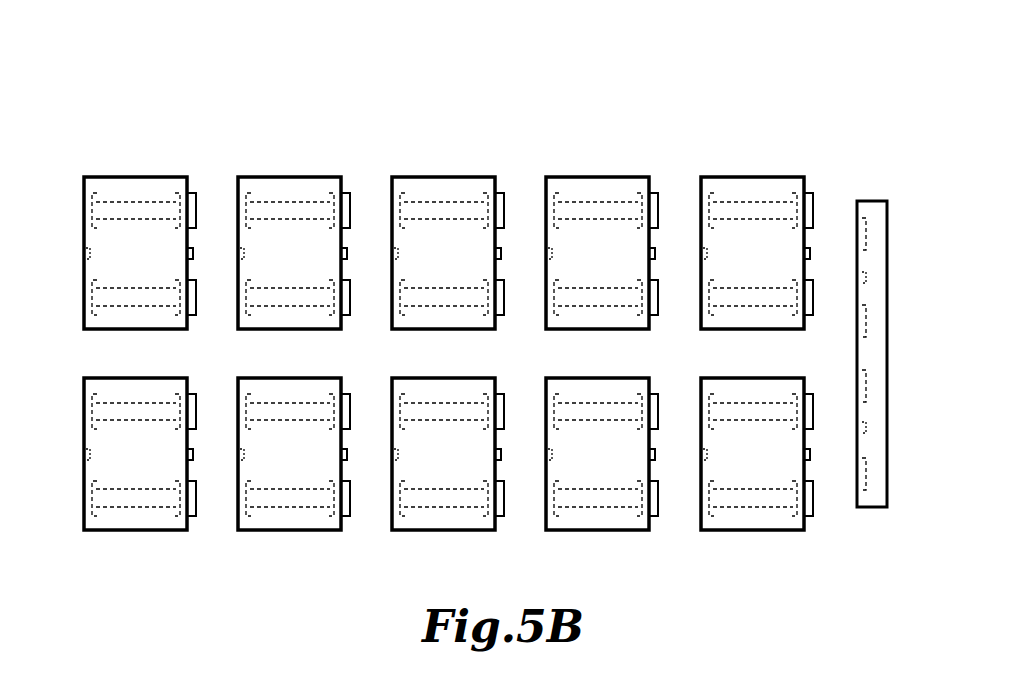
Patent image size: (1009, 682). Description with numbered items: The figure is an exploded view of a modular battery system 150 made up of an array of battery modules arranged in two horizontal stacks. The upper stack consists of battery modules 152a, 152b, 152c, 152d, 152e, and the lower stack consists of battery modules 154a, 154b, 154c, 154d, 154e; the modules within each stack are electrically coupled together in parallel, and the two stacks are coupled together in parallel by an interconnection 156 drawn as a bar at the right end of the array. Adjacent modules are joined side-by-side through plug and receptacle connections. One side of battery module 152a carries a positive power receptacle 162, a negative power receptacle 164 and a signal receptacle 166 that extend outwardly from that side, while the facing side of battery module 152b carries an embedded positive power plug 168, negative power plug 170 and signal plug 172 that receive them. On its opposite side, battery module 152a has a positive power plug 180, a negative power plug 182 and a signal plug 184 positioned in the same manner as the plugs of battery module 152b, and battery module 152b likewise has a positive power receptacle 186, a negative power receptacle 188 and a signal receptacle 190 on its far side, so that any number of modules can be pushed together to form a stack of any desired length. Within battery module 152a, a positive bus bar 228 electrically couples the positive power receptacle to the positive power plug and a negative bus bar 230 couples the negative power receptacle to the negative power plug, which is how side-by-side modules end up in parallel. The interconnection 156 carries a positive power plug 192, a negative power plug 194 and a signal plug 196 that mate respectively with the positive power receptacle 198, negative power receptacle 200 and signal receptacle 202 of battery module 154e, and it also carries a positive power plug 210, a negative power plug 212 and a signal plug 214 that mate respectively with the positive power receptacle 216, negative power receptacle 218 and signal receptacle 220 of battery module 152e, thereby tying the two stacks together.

The modular battery system 150 is at (844, 93).
The battery module 152a is at (130, 177).
The battery module 152b is at (287, 177).
The battery module 152c is at (444, 177).
The battery module 152d is at (599, 177).
The battery module 152e is at (744, 177).
The battery module 154a is at (147, 531).
The battery module 154b is at (292, 531).
The battery module 154c is at (446, 531).
The battery module 154d is at (601, 531).
The battery module 154e is at (759, 531).
The interconnection 156 is at (870, 201).
The positive power receptacle 162 is at (196, 297).
The negative power receptacle 164 is at (191, 193).
The signal receptacle 166 is at (194, 253).
The positive power plug 168 is at (249, 299).
The negative power plug 170 is at (244, 208).
The signal plug 172 is at (245, 254).
The positive power plug 180 is at (82, 300).
The negative power plug 182 is at (91, 207).
The signal plug 184 is at (86, 253).
The positive power receptacle 186 is at (350, 297).
The negative power receptacle 188 is at (348, 208).
The signal receptacle 190 is at (348, 253).
The positive power plug 192 is at (866, 473).
The negative power plug 194 is at (866, 388).
The signal plug 196 is at (866, 430).
The positive power receptacle 198 is at (813, 497).
The negative power receptacle 200 is at (813, 406).
The signal receptacle 202 is at (811, 454).
The positive power plug 210 is at (866, 321).
The negative power plug 212 is at (866, 233).
The signal plug 214 is at (866, 278).
The positive power receptacle 216 is at (813, 297).
The negative power receptacle 218 is at (813, 206).
The signal receptacle 220 is at (811, 253).
The positive bus bar 228 is at (112, 288).
The negative bus bar 230 is at (157, 217).